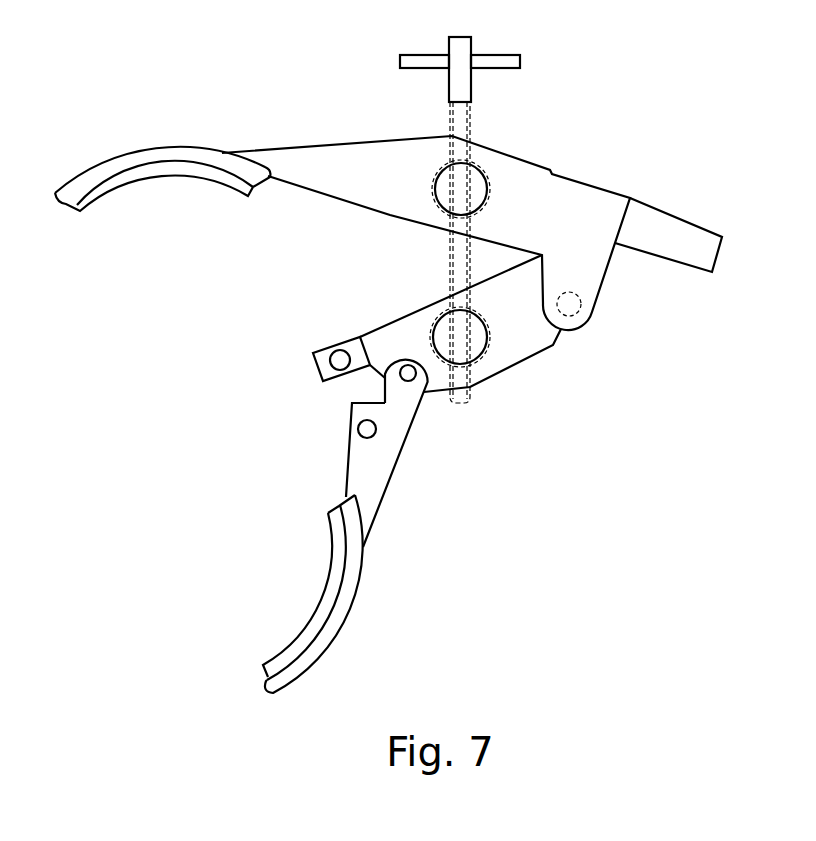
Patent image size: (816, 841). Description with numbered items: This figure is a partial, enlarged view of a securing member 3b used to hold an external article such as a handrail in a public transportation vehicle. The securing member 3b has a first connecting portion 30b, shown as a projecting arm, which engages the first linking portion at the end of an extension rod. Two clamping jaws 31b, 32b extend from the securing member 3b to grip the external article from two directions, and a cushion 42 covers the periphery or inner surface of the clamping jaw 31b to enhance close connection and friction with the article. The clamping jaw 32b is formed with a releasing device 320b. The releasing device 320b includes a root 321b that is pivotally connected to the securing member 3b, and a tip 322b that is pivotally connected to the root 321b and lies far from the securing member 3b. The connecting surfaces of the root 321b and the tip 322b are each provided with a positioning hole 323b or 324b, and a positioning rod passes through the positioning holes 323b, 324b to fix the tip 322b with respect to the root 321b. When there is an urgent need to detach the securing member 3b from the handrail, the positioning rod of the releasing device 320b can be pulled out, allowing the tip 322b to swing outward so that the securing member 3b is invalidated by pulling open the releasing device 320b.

The securing member 3b is at (562, 140).
The first connecting portion 30b is at (670, 237).
The clamping jaw 31b is at (362, 163).
The clamping jaw 32b is at (391, 506).
The cushion 42 is at (151, 178).
The releasing device 320b is at (433, 401).
The root 321b is at (403, 343).
The tip 322b is at (390, 440).
The positioning hole 323b is at (333, 350).
The positioning hole 324b is at (363, 430).